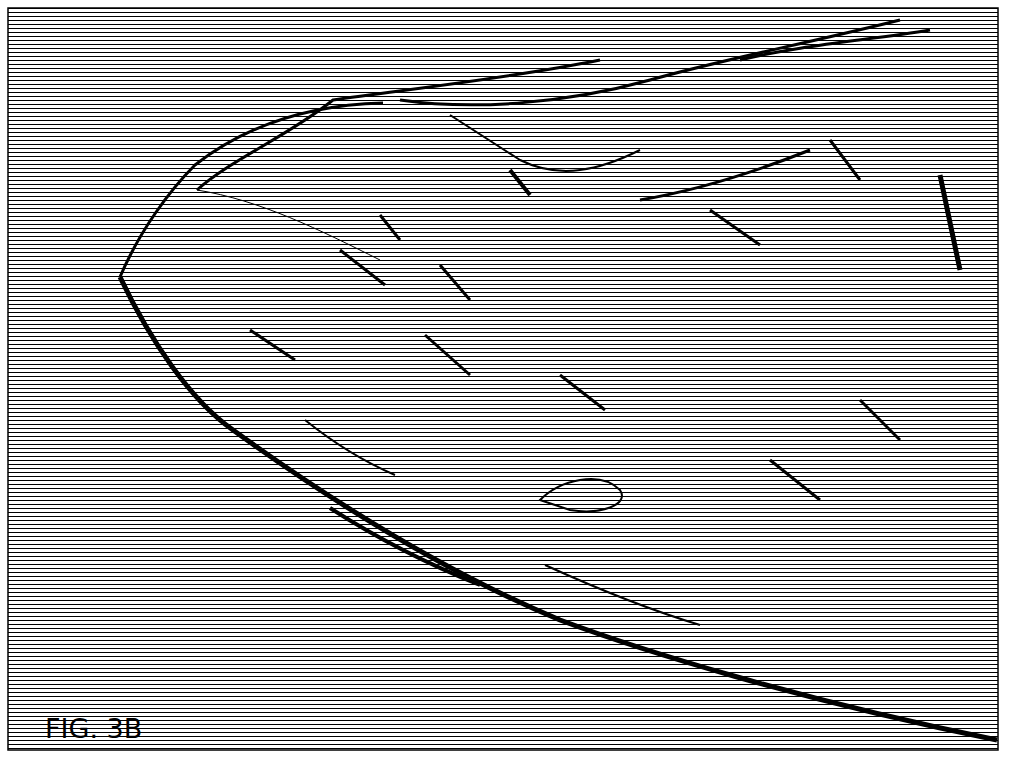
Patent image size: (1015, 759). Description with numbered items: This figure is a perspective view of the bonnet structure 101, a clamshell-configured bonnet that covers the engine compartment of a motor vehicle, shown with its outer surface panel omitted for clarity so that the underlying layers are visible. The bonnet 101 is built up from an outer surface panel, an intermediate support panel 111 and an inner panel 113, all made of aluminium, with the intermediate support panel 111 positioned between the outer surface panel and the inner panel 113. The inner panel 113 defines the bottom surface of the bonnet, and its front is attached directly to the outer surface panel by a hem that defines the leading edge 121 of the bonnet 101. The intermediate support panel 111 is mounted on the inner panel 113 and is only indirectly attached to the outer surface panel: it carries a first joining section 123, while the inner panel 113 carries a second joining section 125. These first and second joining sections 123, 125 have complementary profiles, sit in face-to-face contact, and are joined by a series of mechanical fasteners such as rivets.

The bonnet structure 101 is at (185, 116).
The intermediate support panel 111 is at (160, 215).
The inner panel 113 is at (400, 100).
The first joining section 123 is at (305, 420).
The leading edge 121 is at (330, 508).
The second joining section 125 is at (545, 565).